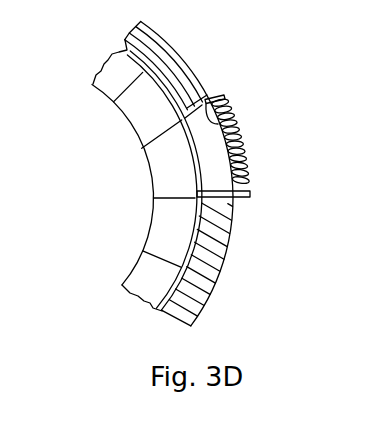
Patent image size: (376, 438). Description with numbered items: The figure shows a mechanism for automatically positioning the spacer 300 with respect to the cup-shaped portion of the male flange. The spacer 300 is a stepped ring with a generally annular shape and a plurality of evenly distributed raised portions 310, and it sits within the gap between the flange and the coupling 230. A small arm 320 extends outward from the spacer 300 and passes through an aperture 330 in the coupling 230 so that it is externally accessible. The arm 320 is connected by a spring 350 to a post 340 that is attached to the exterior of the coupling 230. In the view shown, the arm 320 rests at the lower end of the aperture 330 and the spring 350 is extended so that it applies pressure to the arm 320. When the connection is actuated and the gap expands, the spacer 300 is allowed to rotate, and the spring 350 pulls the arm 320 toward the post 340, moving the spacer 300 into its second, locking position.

The spacer 300 is at (102, 65).
The raised portion 310 is at (152, 158).
The coupling 230 is at (168, 45).
The arm 320 is at (245, 198).
The aperture 330 is at (236, 126).
The post 340 is at (215, 95).
The spring 350 is at (249, 168).